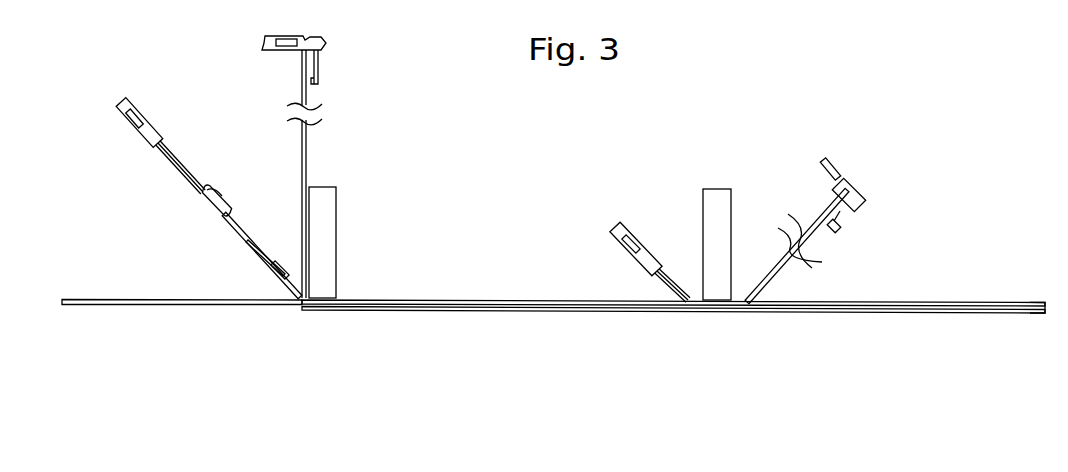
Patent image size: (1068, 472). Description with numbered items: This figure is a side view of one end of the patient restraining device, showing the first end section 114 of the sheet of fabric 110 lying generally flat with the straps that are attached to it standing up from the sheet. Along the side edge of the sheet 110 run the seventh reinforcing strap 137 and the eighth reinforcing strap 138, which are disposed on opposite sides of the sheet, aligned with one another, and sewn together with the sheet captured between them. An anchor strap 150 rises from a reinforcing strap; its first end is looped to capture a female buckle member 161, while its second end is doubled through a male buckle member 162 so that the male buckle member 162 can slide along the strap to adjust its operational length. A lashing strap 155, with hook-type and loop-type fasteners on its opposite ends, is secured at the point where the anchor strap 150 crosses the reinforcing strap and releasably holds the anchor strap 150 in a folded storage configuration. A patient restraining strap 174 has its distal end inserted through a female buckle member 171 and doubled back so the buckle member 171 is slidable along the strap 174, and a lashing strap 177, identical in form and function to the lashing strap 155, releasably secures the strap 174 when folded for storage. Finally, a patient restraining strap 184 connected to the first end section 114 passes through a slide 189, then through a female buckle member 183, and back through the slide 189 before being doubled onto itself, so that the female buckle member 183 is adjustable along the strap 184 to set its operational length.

The sheet of fabric 110 is at (170, 306).
The first end section 114 is at (494, 299).
The seventh reinforcing strap 137 is at (316, 311).
The eighth reinforcing strap 138 is at (1005, 301).
The anchor strap 150 is at (777, 273).
The lashing strap 155 is at (720, 198).
The female buckle member 161 is at (650, 262).
The male buckle member 162 is at (851, 184).
The female buckle member 171 is at (268, 51).
The patient restraining strap 174 is at (307, 152).
The lashing strap 177 is at (325, 211).
The female buckle member 183 is at (117, 101).
The patient restraining strap 184 is at (186, 182).
The slide 189 is at (213, 185).